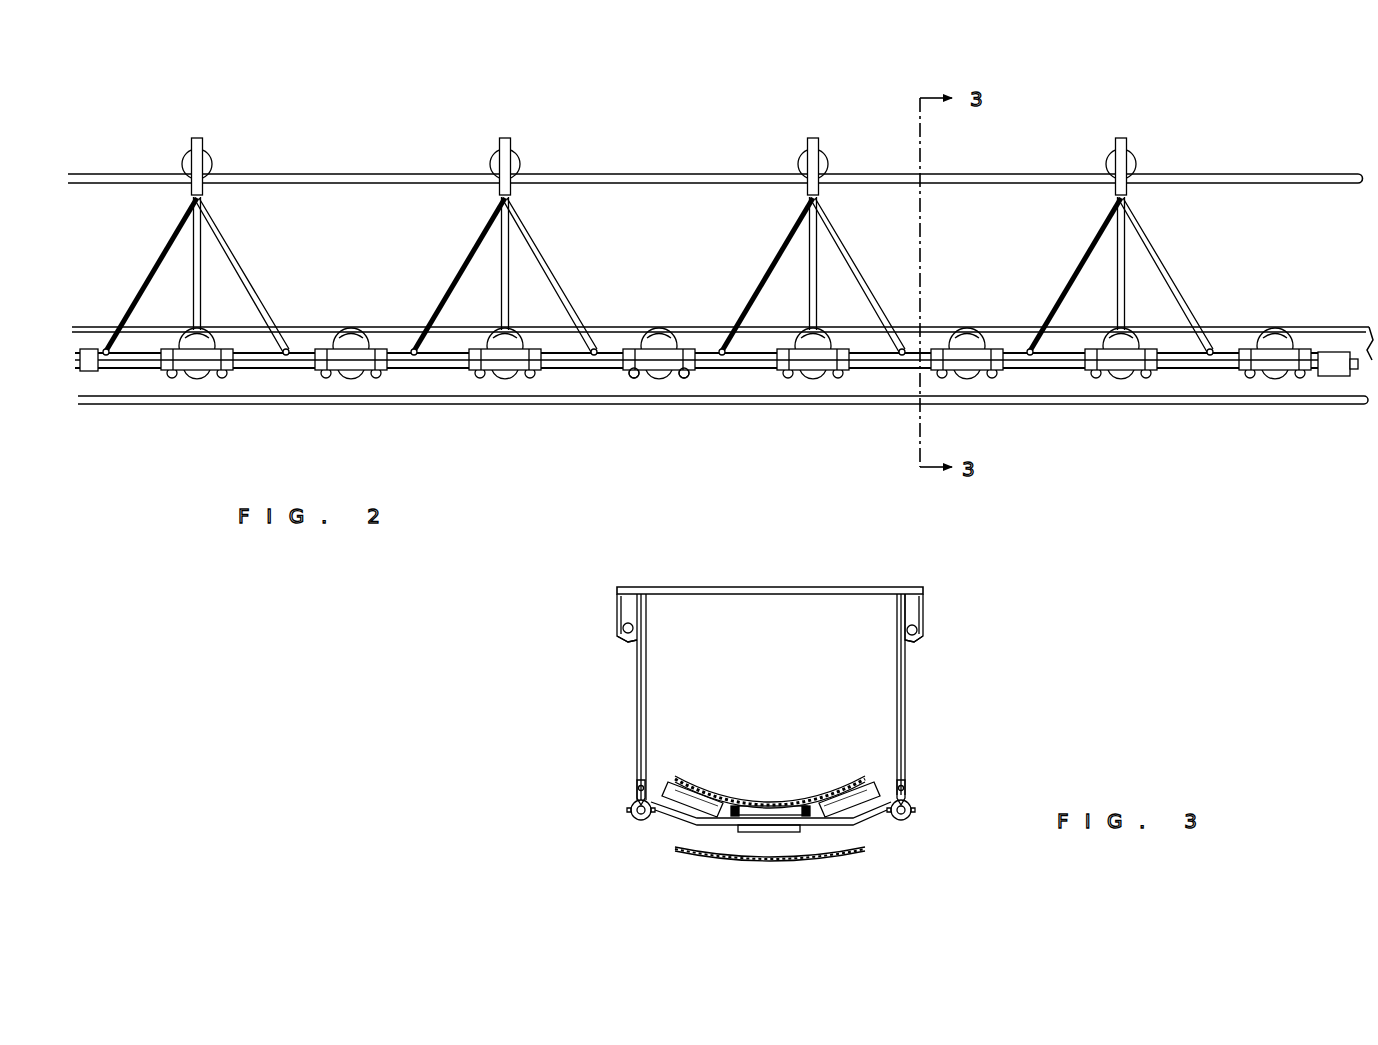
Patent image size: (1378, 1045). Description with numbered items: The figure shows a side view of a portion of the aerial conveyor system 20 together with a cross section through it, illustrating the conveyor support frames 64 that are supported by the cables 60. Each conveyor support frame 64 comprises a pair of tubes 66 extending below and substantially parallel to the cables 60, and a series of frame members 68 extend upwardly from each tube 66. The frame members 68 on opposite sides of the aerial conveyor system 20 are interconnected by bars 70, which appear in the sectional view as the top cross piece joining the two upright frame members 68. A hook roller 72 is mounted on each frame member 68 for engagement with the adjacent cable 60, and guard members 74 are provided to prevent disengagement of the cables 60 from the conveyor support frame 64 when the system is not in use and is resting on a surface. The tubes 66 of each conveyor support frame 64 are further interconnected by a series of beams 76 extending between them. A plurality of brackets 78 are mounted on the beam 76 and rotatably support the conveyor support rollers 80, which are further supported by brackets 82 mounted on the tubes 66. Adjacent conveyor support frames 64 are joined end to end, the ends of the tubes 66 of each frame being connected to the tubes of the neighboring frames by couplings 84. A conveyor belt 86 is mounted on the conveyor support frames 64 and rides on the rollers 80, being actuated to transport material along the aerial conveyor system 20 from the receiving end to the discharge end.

In FIG. 2, the aerial conveyor system 20 is at (355, 130).
In FIG. 3, the cable 60 is at (625, 629).
In FIG. 2, the conveyor support frame 64 is at (421, 371).
In FIG. 2, the tube 66 is at (568, 358).
In FIG. 3, the tube 66 is at (636, 820).
In FIG. 2, the frame member 68 is at (163, 264).
In FIG. 3, the frame member 68 is at (634, 705).
In FIG. 3, the bar 70 is at (765, 587).
In FIG. 2, the hook roller 72 is at (186, 157).
In FIG. 3, the hook roller 72 is at (626, 606).
In FIG. 3, the guard member 74 is at (622, 641).
In FIG. 2, the beam 76 is at (628, 349).
In FIG. 3, the beam 76 is at (870, 822).
In FIG. 3, the bracket 78 is at (733, 832).
In FIG. 2, the conveyor support roller 80 is at (656, 330).
In FIG. 3, the conveyor support roller 80 is at (845, 805).
In FIG. 2, the bracket 82 is at (663, 351).
In FIG. 3, the bracket 82 is at (645, 786).
In FIG. 2, the coupling 84 is at (83, 362).
In FIG. 2, the conveyor belt 86 is at (316, 332).
In FIG. 3, the conveyor belt 86 is at (700, 776).